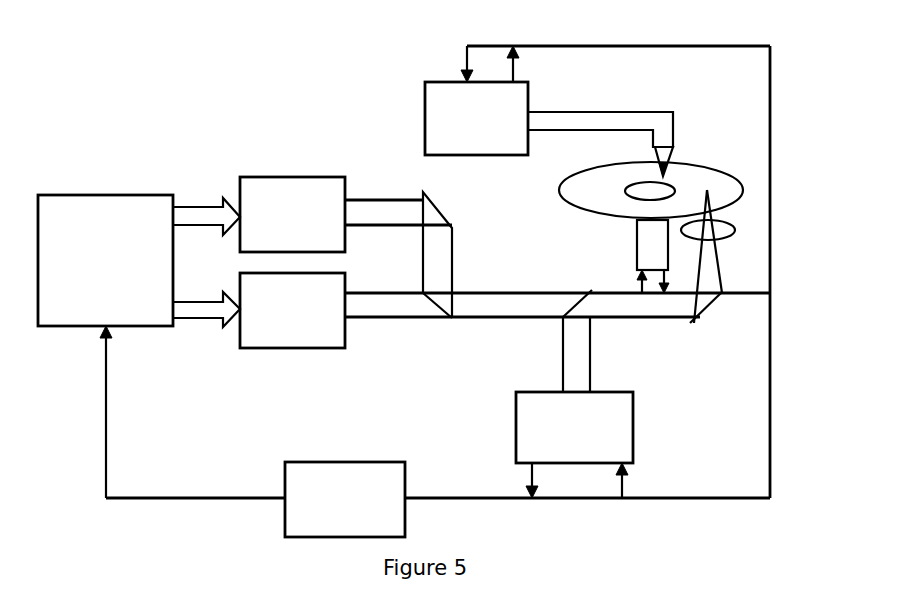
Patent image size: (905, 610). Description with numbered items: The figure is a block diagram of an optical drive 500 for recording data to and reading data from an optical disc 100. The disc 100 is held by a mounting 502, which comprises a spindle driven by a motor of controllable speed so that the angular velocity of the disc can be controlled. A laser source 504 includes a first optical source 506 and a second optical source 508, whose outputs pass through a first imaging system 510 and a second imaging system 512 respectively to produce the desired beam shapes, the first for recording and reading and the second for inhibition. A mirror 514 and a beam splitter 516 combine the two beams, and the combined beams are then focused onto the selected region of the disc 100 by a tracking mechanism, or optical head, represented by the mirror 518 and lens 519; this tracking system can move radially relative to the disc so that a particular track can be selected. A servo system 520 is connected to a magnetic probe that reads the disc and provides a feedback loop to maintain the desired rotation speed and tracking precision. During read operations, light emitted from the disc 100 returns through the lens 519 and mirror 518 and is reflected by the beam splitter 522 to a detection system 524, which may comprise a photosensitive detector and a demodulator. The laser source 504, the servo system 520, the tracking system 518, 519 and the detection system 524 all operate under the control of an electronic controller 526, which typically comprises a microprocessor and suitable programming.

The optical drive 500 is at (161, 97).
The optical disc 100 is at (703, 173).
The mounting 502 is at (637, 240).
The laser source 504 is at (89, 270).
The first optical source 506 is at (202, 207).
The second optical source 508 is at (200, 320).
The first imaging system 510 is at (276, 229).
The second imaging system 512 is at (276, 319).
The mirror 514 is at (442, 216).
The beam splitter 516 is at (428, 302).
The mirror 518 is at (713, 305).
The lens 519 is at (738, 213).
The servo system 520 is at (461, 130).
The beam splitter 522 is at (583, 318).
The detection system 524 is at (558, 440).
The electronic controller 526 is at (328, 510).